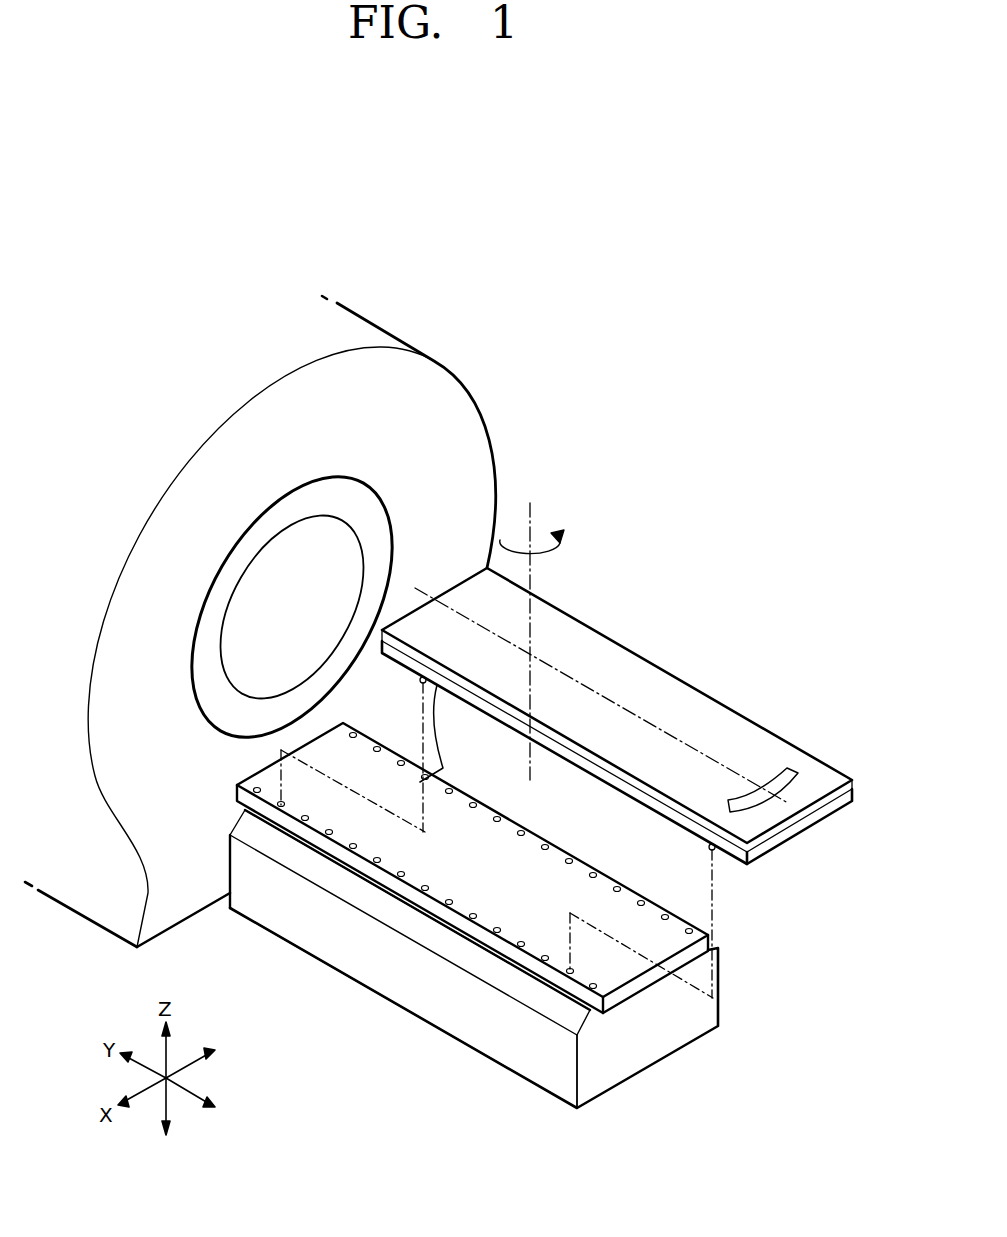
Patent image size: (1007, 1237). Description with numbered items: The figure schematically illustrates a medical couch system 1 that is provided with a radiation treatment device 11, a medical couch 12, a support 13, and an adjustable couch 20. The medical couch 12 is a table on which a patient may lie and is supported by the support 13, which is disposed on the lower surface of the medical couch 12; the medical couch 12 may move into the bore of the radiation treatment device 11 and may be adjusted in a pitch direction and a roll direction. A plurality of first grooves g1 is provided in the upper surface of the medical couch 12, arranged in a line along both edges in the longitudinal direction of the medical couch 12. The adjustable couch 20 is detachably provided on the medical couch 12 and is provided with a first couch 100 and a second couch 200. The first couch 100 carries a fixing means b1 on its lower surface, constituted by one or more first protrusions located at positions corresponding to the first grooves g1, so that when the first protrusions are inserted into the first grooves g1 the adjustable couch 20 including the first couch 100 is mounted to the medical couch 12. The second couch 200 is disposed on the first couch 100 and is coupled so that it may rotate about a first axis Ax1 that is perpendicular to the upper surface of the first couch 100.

The medical couch system 1 is at (693, 340).
The radiation treatment device 11 is at (475, 420).
The medical couch 12 is at (478, 895).
The support 13 is at (337, 948).
The adjustable couch 20 is at (712, 677).
The first couch 100 is at (840, 808).
The second couch 200 is at (844, 783).
The first axis Ax1 is at (530, 518).
The fixing means b1 is at (709, 848).
The first grooves g1 is at (568, 967).